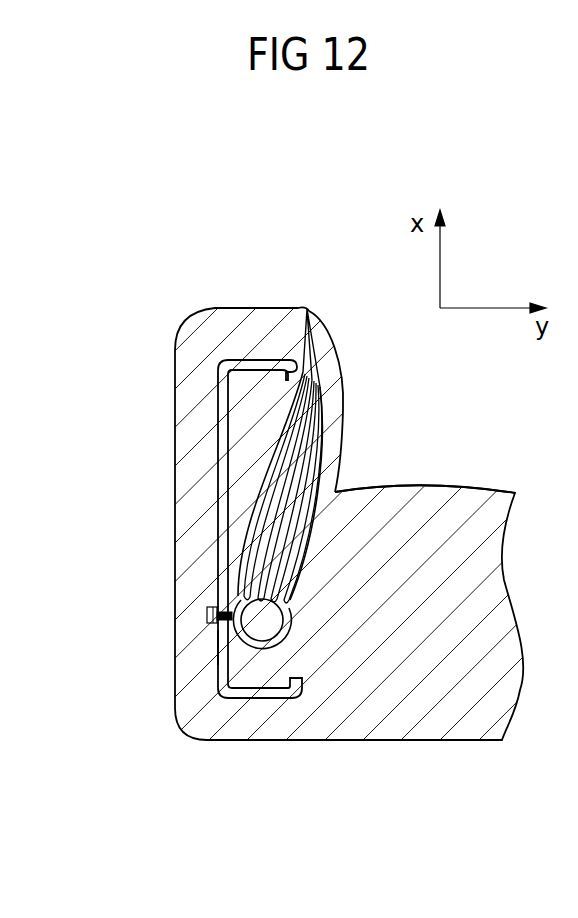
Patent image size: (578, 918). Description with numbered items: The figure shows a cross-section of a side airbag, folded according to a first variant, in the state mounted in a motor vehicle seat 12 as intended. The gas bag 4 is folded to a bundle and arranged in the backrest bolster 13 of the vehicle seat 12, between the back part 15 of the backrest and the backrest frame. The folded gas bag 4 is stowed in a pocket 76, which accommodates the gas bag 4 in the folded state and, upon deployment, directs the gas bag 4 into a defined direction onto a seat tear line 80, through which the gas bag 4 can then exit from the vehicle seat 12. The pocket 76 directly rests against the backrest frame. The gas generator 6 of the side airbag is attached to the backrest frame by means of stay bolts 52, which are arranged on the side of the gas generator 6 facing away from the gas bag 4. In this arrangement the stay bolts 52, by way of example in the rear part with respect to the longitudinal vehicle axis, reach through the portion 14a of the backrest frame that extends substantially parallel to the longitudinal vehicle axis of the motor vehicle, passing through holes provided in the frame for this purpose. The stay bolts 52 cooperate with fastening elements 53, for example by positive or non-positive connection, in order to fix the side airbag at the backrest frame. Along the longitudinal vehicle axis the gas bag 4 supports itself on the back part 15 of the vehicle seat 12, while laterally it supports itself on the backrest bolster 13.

The vehicle seat 12 is at (388, 741).
The backrest bolster 13 is at (203, 332).
The pocket 76 is at (318, 370).
The back part 15 is at (427, 505).
The portion of the backrest frame 14a is at (227, 438).
The stay bolts 52 is at (207, 647).
The gas bag 4 is at (290, 417).
The seat tear line 80 is at (309, 311).
The gas generator 6 is at (261, 625).
The fastening elements 53 is at (207, 613).